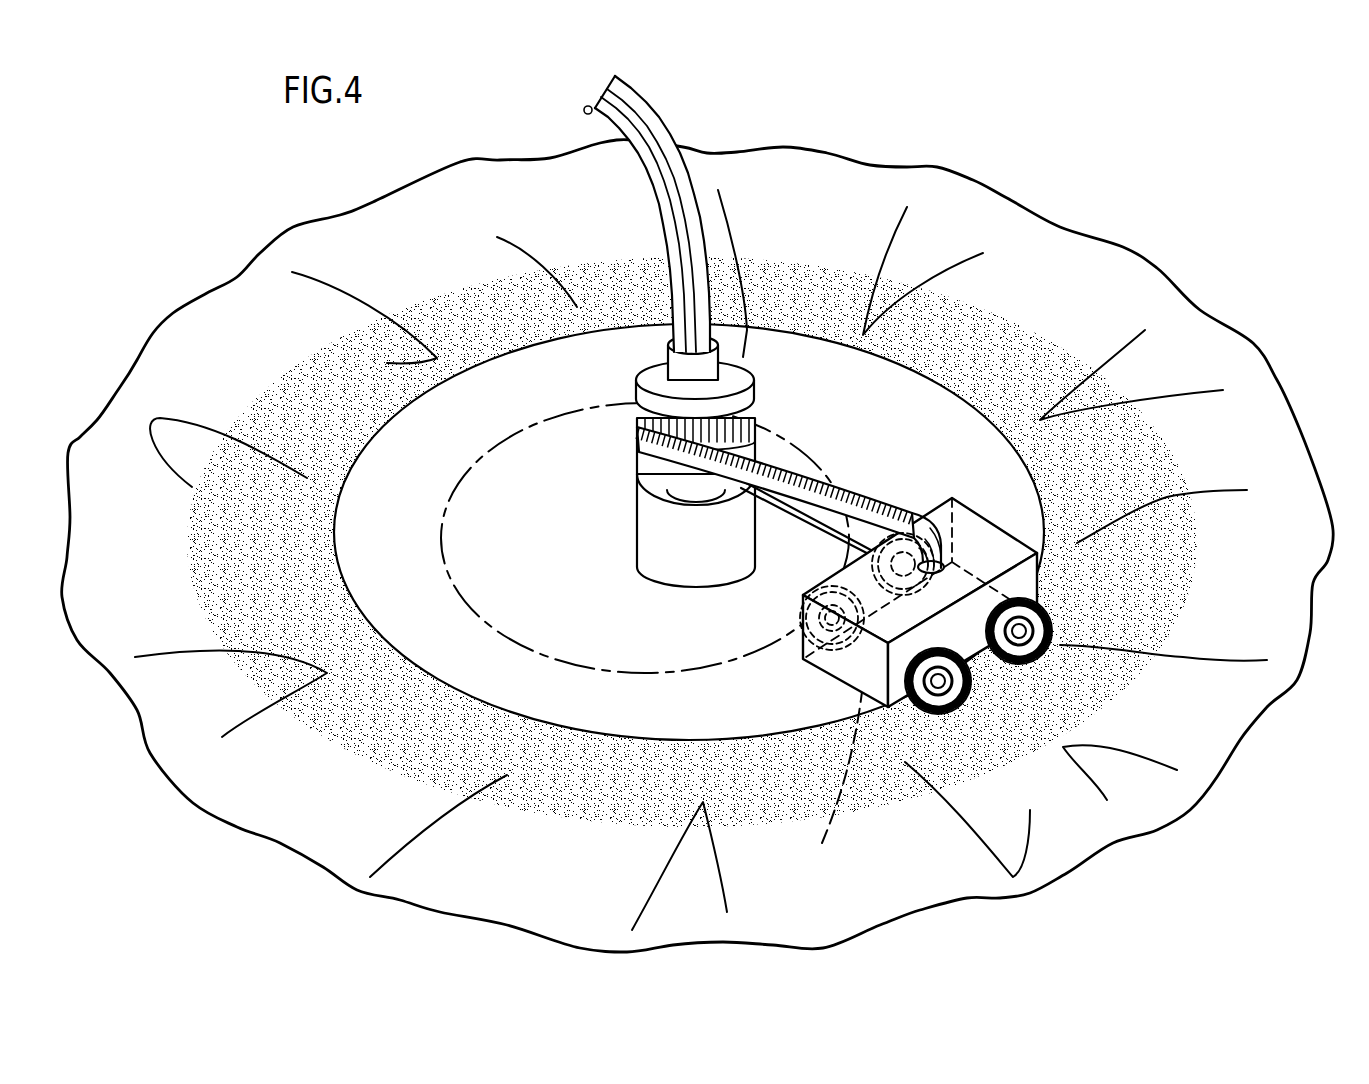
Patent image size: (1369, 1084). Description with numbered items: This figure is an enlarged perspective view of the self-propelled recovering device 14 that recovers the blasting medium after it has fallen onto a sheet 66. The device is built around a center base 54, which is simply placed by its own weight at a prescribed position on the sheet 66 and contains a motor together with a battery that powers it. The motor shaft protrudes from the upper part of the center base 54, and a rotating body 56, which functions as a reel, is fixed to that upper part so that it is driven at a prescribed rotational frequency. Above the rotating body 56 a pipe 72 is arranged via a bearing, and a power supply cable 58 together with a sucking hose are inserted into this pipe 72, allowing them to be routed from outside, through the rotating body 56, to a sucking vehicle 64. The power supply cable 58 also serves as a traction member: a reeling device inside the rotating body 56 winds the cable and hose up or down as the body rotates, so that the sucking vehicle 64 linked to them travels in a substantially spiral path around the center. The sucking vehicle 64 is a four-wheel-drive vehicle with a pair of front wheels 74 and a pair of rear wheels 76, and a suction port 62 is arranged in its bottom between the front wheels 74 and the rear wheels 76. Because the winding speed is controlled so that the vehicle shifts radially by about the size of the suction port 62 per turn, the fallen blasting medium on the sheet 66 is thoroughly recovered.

The self-propelled recovering device 14 is at (1068, 208).
The sheet 66 is at (1110, 268).
The suction port 62 is at (825, 764).
The center base 54 is at (655, 558).
The rotating body 56 is at (645, 452).
The pipe 72 is at (712, 373).
The power supply cable 58 is at (648, 104).
The sucking vehicle 64 is at (935, 505).
The front wheels 74 is at (800, 618).
The rear wheels 76 is at (893, 532).